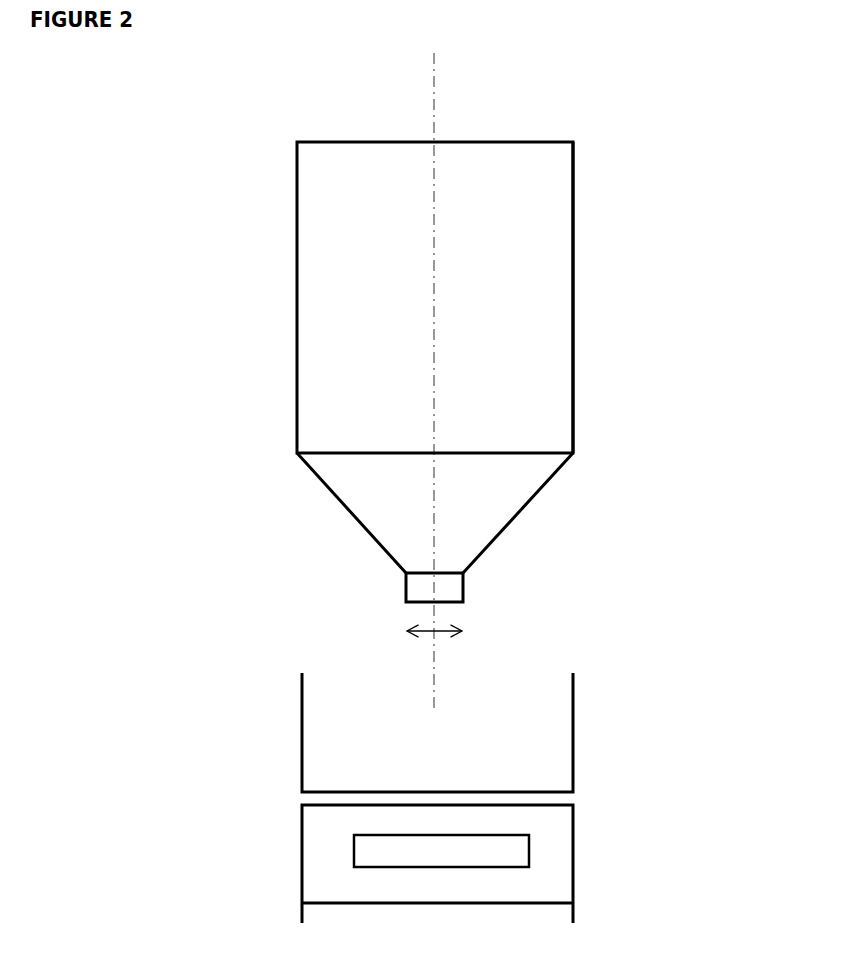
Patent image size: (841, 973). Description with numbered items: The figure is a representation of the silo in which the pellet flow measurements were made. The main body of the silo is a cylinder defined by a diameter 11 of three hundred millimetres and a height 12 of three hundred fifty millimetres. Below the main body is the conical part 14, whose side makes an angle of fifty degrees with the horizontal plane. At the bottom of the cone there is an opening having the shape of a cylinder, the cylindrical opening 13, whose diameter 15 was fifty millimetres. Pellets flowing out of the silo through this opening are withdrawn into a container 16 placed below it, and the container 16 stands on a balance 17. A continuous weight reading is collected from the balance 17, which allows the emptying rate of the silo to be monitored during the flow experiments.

The diameter 11 is at (571, 103).
The height 12 is at (612, 451).
The cylindrical opening 13 is at (468, 583).
The conical part 14 is at (338, 469).
The diameter of the cylindrical opening 15 is at (462, 632).
The container 16 is at (585, 759).
The balance 17 is at (464, 864).